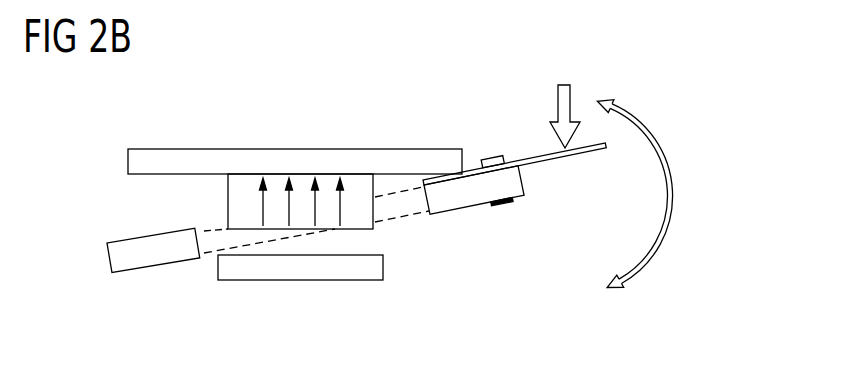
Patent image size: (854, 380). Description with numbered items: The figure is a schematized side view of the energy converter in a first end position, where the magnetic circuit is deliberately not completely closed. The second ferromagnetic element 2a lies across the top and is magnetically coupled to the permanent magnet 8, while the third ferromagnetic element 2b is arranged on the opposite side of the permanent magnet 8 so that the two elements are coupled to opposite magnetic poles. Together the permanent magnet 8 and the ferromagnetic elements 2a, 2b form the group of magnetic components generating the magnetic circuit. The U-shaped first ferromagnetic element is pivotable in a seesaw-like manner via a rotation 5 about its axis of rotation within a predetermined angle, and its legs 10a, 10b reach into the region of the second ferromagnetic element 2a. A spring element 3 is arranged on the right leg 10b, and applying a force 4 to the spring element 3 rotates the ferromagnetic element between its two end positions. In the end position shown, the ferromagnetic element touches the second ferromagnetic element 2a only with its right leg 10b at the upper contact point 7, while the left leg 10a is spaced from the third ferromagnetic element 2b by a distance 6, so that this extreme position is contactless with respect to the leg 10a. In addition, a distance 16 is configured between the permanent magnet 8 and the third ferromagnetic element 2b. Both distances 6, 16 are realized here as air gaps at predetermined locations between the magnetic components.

The second ferromagnetic element 2a is at (128, 161).
The third ferromagnetic element 2b is at (383, 268).
The spring element 3 is at (609, 147).
The force 4 is at (558, 104).
The rotation 5 is at (674, 165).
The distance 6 is at (213, 254).
The contact point 7 is at (465, 171).
The permanent magnet 8 is at (228, 205).
The leg 10a is at (107, 258).
The leg 10b is at (473, 193).
The distance 16 is at (355, 242).